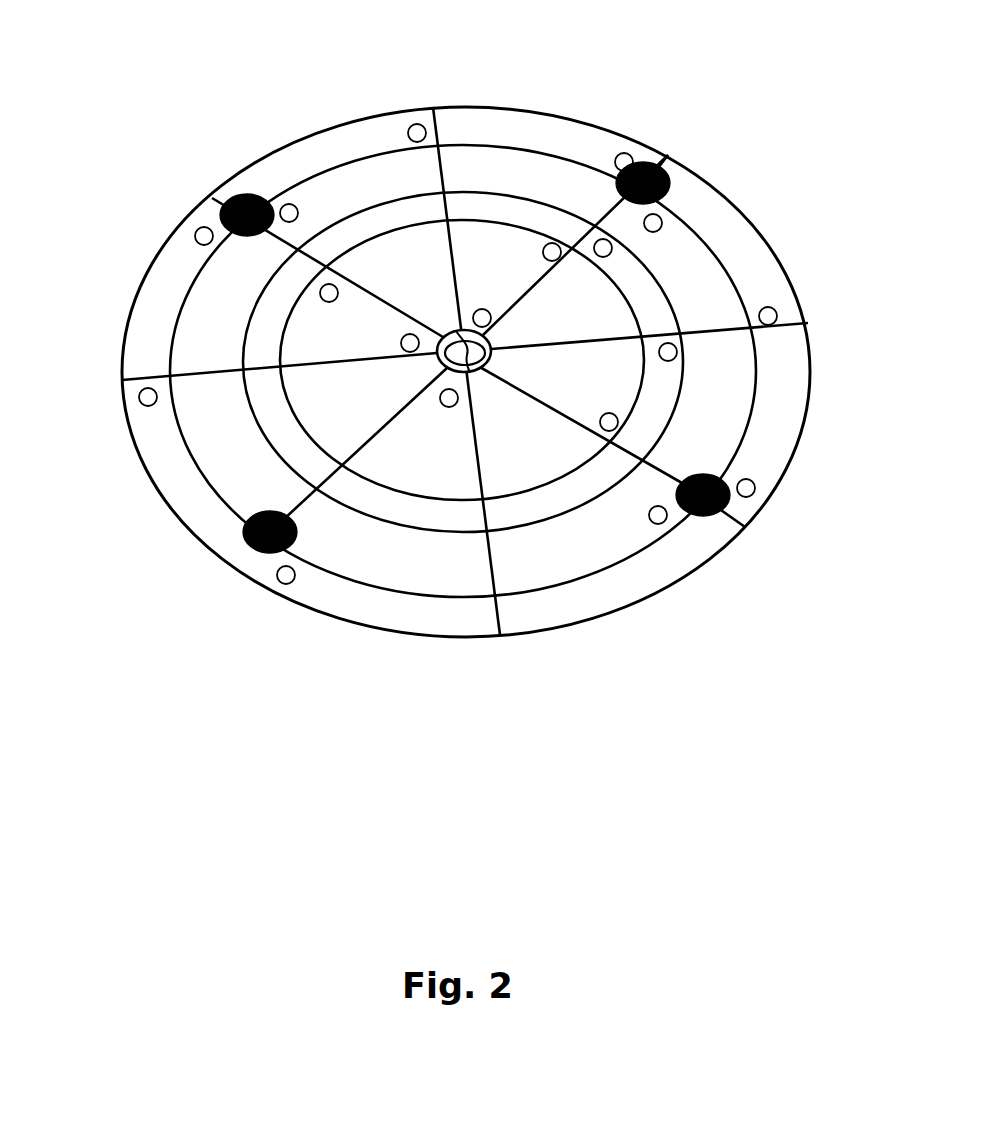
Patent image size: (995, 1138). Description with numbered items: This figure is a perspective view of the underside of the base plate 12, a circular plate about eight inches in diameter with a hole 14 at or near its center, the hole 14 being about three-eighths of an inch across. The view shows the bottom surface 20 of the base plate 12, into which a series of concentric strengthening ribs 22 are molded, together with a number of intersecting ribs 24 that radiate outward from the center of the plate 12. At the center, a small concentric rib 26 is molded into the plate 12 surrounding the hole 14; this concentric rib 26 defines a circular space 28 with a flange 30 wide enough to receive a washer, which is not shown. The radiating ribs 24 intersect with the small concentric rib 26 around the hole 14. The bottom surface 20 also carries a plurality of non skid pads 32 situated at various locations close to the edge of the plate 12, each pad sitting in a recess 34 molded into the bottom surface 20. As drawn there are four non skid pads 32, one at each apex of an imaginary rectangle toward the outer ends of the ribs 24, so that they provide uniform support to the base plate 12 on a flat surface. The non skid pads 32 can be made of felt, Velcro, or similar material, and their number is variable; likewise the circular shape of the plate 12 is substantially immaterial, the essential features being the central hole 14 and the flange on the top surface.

The base plate 12 is at (698, 295).
The hole 14 is at (652, 396).
The bottom surface 20 is at (501, 288).
The concentric strengthening ribs 22 is at (282, 405).
The intersecting ribs 24 is at (412, 420).
The small concentric rib 26 is at (402, 340).
The circular space 28 is at (455, 338).
The flange 30 is at (487, 540).
The non skid pads 32 is at (247, 198).
The recesses 34 is at (263, 198).